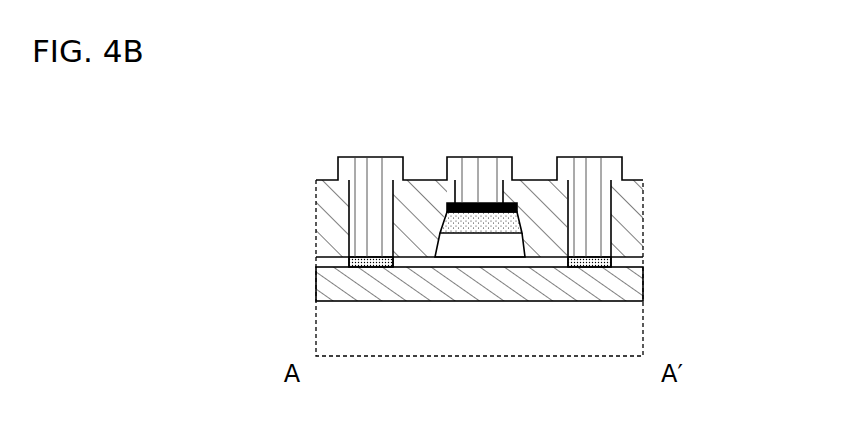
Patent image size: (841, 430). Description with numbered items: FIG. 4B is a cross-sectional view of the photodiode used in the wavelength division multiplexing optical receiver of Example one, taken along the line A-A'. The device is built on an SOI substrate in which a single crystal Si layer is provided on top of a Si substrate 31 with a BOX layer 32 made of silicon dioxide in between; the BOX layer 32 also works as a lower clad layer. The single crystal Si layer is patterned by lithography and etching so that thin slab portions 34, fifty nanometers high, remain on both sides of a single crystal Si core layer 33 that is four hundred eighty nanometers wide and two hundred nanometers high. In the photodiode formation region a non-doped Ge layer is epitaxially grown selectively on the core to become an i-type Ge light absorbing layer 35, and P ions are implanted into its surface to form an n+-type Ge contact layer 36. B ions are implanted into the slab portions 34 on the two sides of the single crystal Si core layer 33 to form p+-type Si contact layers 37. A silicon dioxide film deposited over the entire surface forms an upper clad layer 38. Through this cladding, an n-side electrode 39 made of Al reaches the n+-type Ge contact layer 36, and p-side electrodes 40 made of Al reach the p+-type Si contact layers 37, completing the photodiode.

The Si substrate 31 is at (643, 330).
The BOX layer 32 is at (642, 285).
The single crystal Si core layer 33 is at (458, 244).
The slab portions 34 is at (322, 262).
The i-type Ge light absorbing layer 35 is at (457, 224).
The n+-type Ge contact layer 36 is at (446, 206).
The p+-type Si contact layers 37 is at (373, 268).
The upper clad layer 38 is at (643, 229).
The n-side electrode 39 is at (482, 162).
The p-side electrode 40 is at (368, 167).